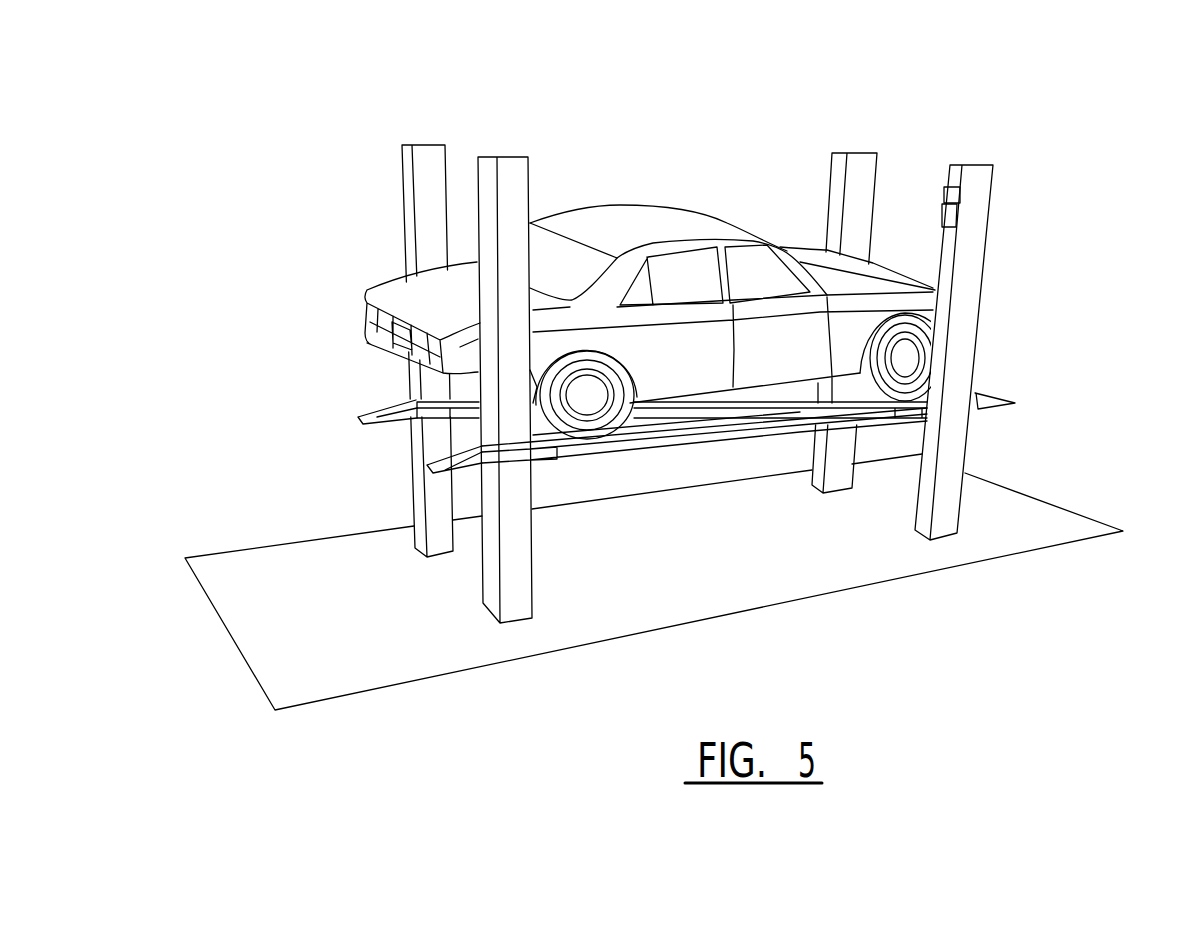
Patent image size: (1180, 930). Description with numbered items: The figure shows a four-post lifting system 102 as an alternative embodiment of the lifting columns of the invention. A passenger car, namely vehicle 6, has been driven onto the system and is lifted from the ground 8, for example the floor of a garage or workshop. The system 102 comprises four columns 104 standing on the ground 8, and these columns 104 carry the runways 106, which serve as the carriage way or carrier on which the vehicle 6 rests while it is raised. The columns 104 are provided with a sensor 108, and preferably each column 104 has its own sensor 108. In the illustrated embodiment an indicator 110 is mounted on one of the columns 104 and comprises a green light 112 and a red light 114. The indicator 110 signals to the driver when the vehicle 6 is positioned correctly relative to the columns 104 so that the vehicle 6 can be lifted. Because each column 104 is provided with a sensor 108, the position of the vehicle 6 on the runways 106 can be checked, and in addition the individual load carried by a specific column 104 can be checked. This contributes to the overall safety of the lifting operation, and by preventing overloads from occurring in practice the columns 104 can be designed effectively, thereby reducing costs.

The passenger car 6 is at (638, 213).
The ground 8 is at (388, 680).
The four-post lifting system 102 is at (722, 351).
The column 104 is at (982, 203).
The runway 106 is at (405, 389).
The sensor 108 is at (432, 432).
The indicator 110 is at (915, 183).
The green light 112 is at (949, 216).
The red light 114 is at (953, 193).